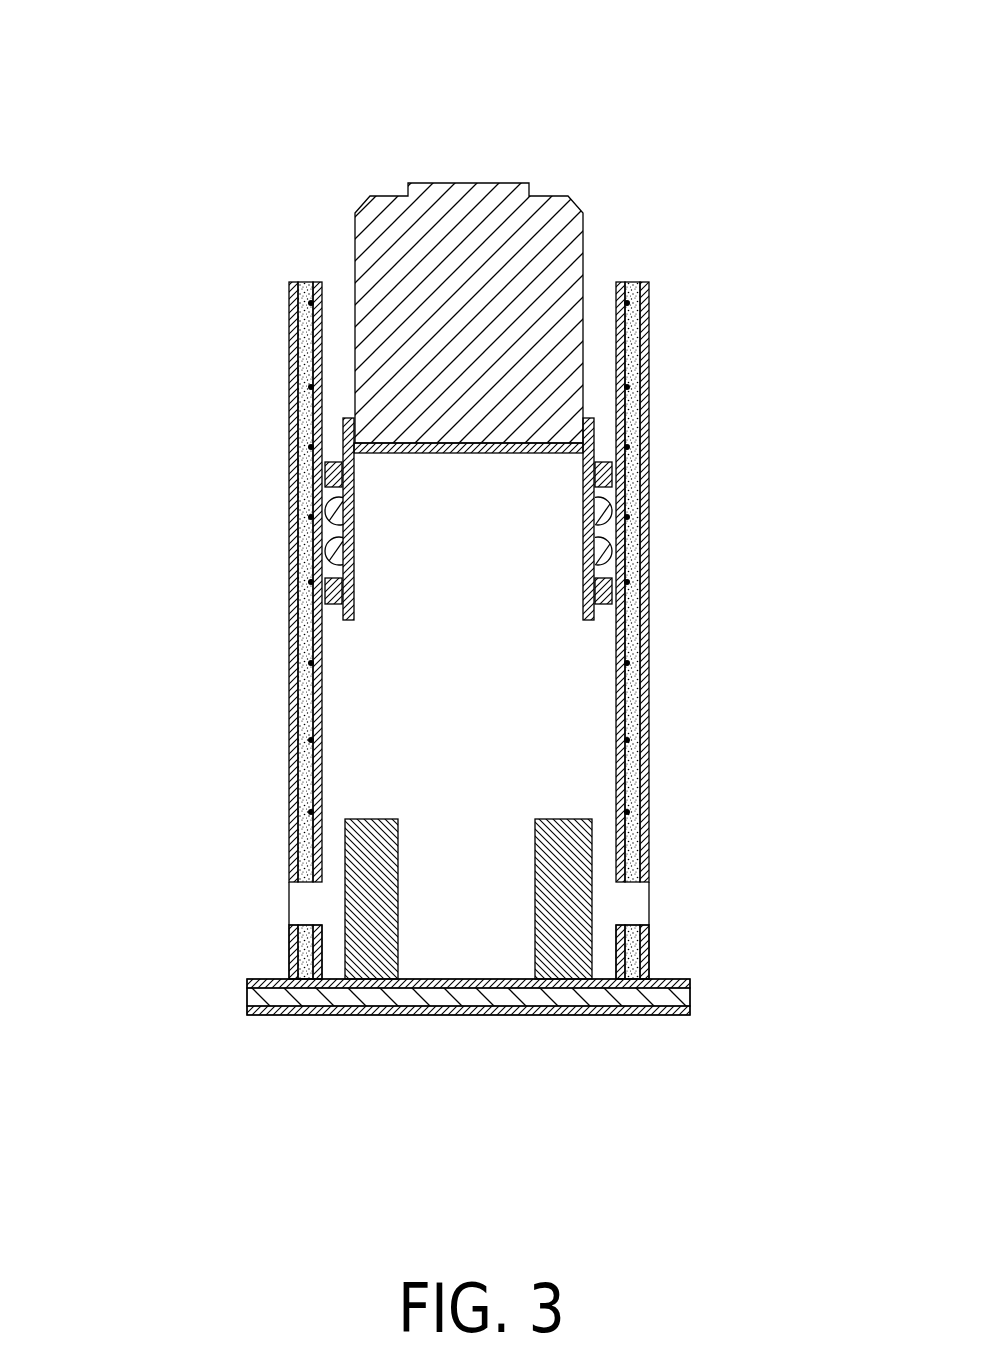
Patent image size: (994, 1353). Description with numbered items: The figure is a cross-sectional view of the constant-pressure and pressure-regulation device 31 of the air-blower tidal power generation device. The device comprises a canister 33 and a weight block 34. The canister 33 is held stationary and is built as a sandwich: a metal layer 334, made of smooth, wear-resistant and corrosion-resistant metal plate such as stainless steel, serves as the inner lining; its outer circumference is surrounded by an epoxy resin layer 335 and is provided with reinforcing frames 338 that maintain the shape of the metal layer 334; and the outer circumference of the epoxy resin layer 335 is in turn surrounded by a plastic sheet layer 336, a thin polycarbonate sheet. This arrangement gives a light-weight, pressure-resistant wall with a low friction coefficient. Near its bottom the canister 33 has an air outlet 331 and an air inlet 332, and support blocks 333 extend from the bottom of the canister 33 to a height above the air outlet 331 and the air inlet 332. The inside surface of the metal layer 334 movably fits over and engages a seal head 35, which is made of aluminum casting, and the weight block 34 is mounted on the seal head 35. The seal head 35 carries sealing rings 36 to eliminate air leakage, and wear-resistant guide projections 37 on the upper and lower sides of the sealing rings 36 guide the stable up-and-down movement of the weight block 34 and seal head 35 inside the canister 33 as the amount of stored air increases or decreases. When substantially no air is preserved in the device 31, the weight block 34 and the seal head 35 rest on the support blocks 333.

The constant-pressure and pressure-regulation device 31 is at (698, 148).
The canister 33 is at (662, 440).
The weight block 34 is at (407, 233).
The seal head 35 is at (350, 428).
The sealing ring 36 is at (328, 508).
The guide projection 37 is at (327, 480).
The air outlet 331 is at (640, 903).
The air inlet 332 is at (305, 907).
The support block 333 is at (348, 958).
The metal layer 334 is at (638, 470).
The epoxy resin layer 335 is at (633, 557).
The plastic sheet layer 336 is at (643, 635).
The reinforcing frame 338 is at (293, 672).